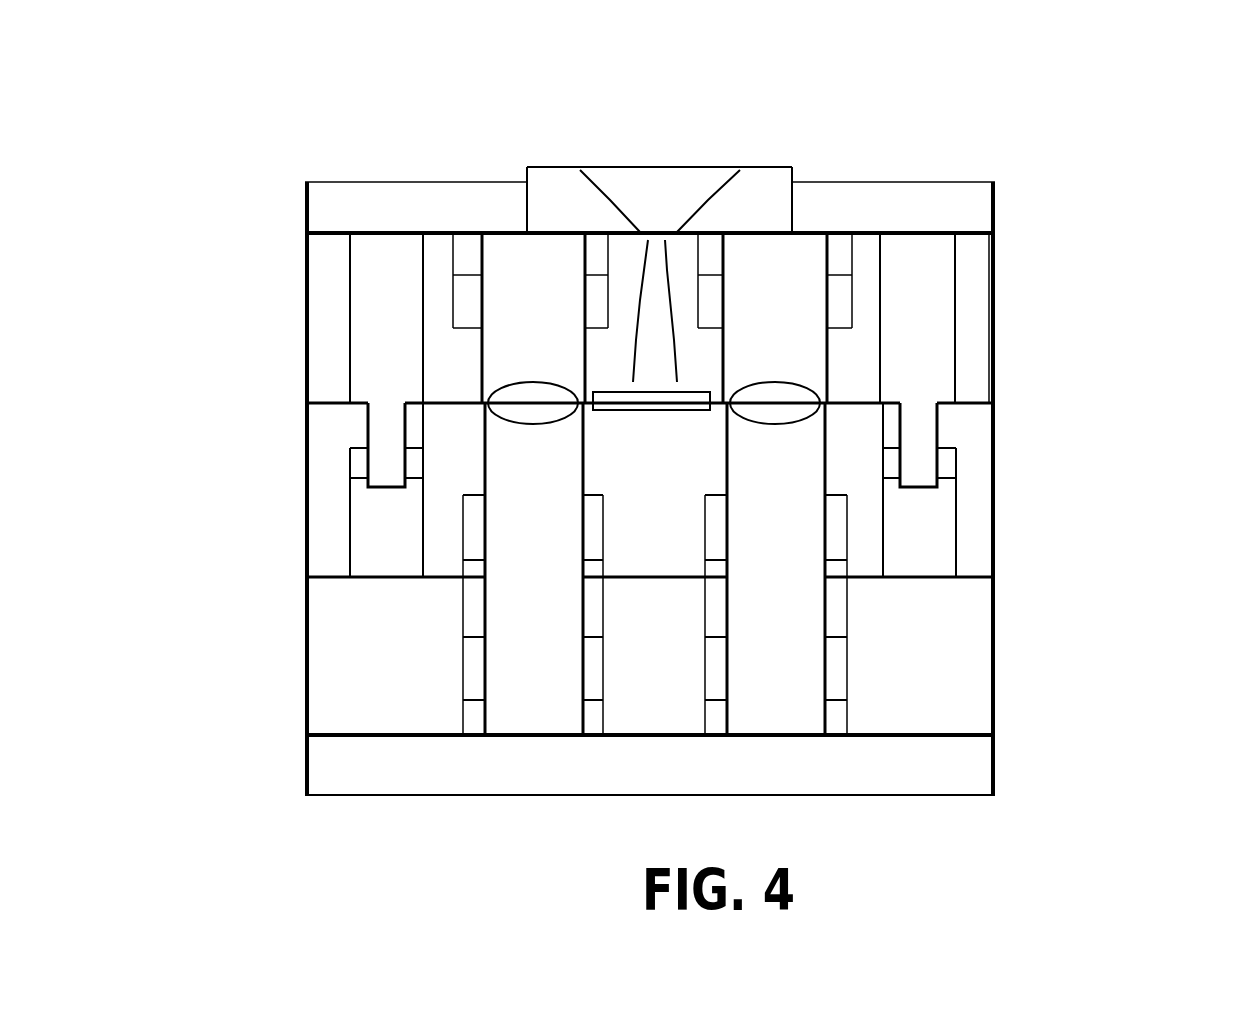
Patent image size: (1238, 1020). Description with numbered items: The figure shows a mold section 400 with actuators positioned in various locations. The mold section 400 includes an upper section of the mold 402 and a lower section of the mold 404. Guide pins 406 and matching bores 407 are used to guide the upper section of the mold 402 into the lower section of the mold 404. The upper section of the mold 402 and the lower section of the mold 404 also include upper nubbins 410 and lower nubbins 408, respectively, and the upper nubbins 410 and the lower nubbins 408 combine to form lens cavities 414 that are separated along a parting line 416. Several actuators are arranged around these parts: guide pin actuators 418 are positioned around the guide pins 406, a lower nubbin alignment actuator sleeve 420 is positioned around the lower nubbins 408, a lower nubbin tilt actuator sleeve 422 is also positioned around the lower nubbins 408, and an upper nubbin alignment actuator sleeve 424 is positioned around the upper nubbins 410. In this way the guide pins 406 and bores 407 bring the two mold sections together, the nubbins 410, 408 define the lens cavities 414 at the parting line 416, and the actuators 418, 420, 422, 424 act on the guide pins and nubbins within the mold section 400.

The mold section 400 is at (735, 78).
The upper section of the mold 402 is at (186, 287).
The lower section of the mold 404 is at (196, 548).
The guide pins 406 is at (380, 427).
The matching bores 407 is at (330, 448).
The lower nubbins 408 is at (497, 583).
The upper nubbins 410 is at (528, 288).
The lens cavities 414 is at (497, 385).
The parting line 416 is at (967, 392).
The guide pin actuators 418 is at (813, 400).
The lower nubbin alignment actuator sleeve 420 is at (884, 544).
The lower nubbin tilt actuator sleeve 422 is at (893, 652).
The upper nubbin alignment actuator sleeve 424 is at (816, 280).